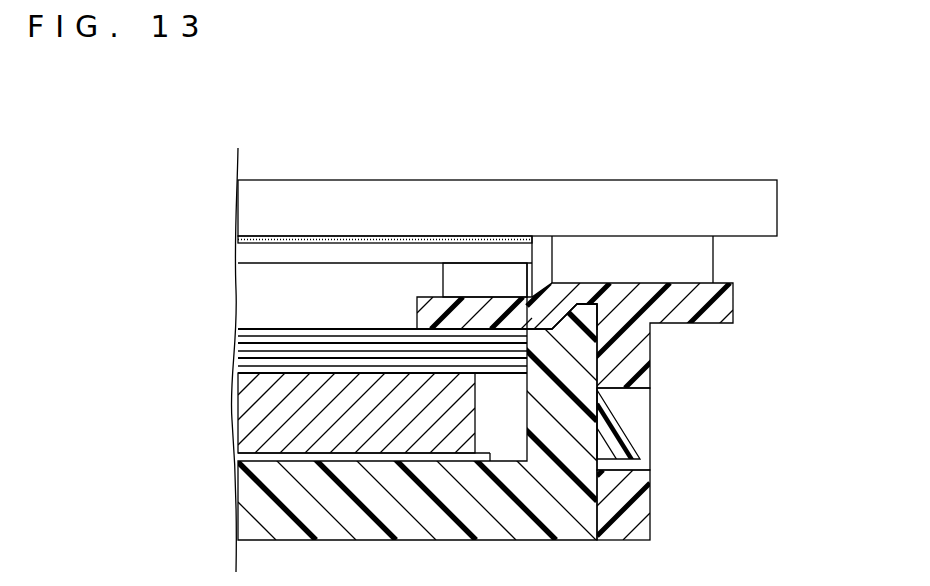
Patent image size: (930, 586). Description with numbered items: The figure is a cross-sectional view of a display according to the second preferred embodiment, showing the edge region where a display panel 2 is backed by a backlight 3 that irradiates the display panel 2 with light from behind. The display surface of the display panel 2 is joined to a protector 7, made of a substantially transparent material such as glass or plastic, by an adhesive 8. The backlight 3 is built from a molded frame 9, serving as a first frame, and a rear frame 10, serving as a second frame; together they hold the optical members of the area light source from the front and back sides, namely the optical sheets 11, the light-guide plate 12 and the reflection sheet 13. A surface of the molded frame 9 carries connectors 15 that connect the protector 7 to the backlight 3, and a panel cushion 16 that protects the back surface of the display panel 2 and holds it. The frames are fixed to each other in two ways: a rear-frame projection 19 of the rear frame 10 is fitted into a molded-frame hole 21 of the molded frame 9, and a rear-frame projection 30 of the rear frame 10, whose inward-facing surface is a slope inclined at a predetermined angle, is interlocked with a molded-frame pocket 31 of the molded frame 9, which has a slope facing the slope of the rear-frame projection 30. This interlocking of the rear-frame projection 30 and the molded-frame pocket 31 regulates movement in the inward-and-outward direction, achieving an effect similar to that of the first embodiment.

The display panel 2 is at (243, 250).
The backlight 3 is at (170, 263).
The protector 7 is at (763, 207).
The adhesive 8 is at (236, 238).
The molded frame 9 is at (720, 303).
The rear frame 10 is at (252, 503).
The optical sheets 11 is at (232, 329).
The light-guide plate 12 is at (252, 418).
The reflection sheet 13 is at (242, 456).
The connectors 15 is at (703, 263).
The panel cushion 16 is at (488, 280).
The rear-frame projection 19 is at (625, 445).
The molded-frame hole 21 is at (630, 410).
The rear-frame projection 30 is at (583, 322).
The molded-frame pocket 31 is at (597, 303).